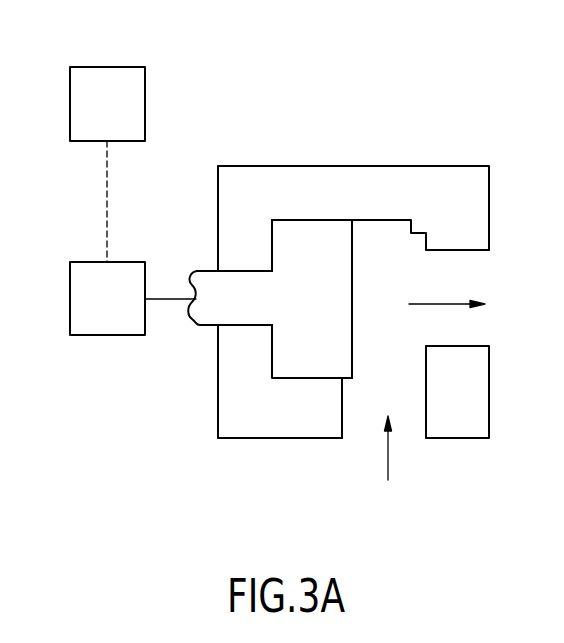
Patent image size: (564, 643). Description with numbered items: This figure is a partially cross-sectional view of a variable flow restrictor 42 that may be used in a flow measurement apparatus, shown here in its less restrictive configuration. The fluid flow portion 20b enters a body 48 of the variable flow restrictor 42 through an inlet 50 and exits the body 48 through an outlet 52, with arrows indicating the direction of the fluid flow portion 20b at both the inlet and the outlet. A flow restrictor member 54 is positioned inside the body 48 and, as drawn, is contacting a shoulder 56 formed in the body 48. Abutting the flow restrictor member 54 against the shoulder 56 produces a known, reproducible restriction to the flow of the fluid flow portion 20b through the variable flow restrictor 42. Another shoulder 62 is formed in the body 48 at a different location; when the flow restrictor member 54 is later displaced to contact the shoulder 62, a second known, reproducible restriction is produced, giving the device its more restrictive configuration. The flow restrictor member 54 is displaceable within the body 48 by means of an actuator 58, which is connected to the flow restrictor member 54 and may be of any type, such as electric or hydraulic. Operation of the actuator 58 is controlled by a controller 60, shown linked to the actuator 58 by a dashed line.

The fluid flow portion 20b is at (442, 304).
The variable flow restrictor 42 is at (439, 96).
The body 48 is at (248, 440).
The inlet 50 is at (366, 428).
The outlet 52 is at (467, 326).
The flow restrictor member 54 is at (272, 366).
The shoulder 56 is at (272, 241).
The actuator 58 is at (81, 335).
The controller 60 is at (145, 87).
The shoulder 62 is at (402, 229).